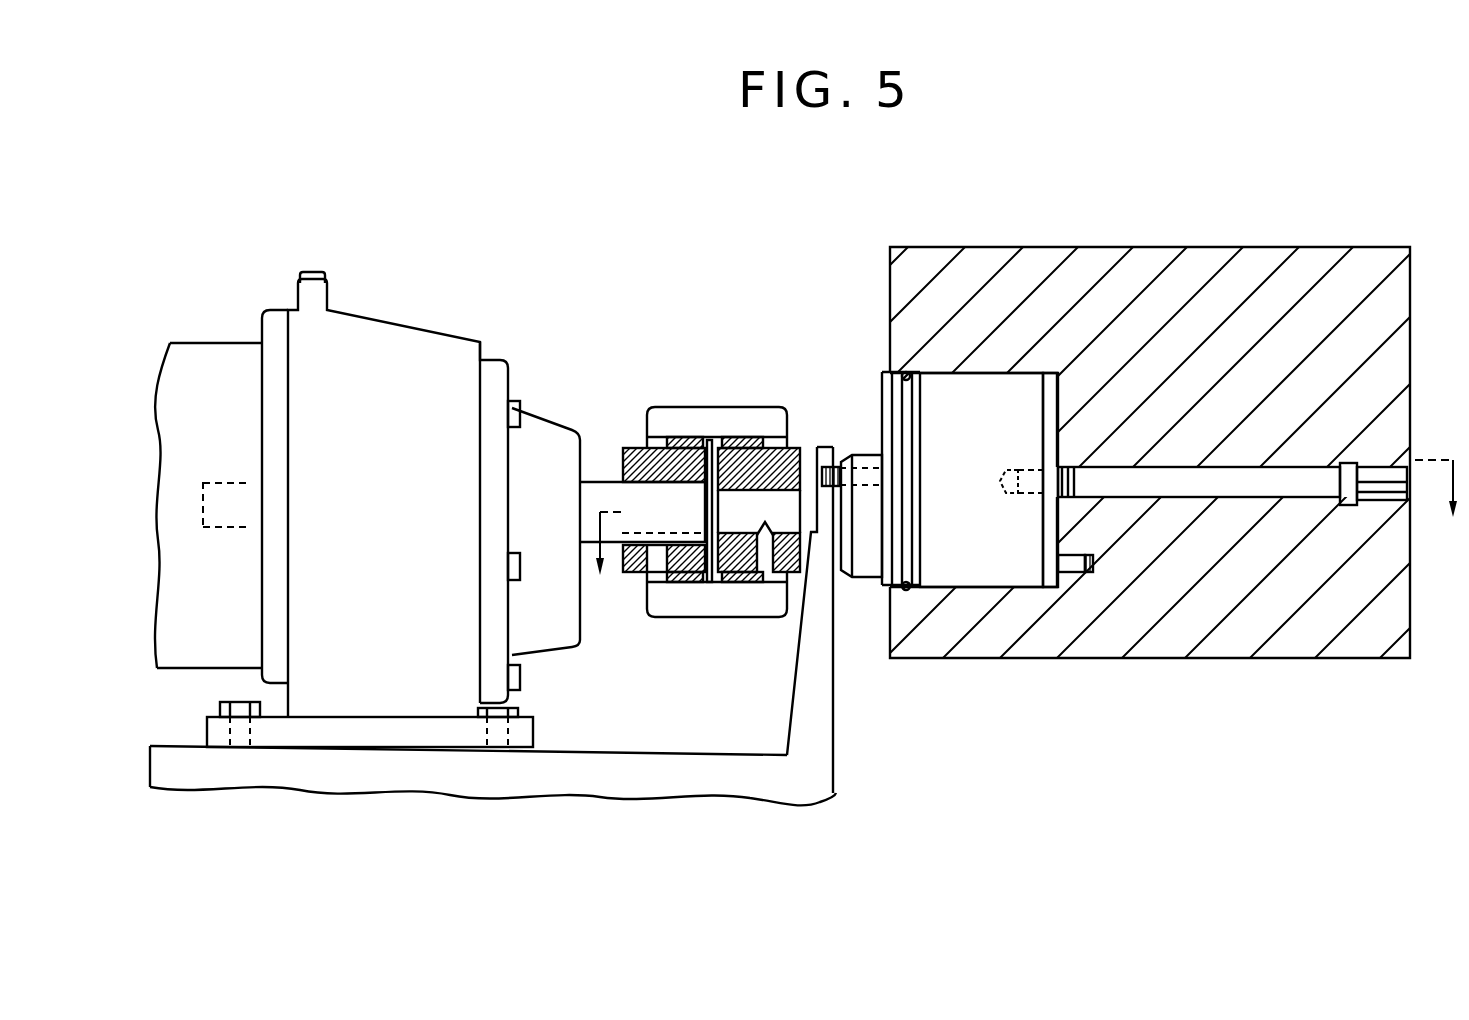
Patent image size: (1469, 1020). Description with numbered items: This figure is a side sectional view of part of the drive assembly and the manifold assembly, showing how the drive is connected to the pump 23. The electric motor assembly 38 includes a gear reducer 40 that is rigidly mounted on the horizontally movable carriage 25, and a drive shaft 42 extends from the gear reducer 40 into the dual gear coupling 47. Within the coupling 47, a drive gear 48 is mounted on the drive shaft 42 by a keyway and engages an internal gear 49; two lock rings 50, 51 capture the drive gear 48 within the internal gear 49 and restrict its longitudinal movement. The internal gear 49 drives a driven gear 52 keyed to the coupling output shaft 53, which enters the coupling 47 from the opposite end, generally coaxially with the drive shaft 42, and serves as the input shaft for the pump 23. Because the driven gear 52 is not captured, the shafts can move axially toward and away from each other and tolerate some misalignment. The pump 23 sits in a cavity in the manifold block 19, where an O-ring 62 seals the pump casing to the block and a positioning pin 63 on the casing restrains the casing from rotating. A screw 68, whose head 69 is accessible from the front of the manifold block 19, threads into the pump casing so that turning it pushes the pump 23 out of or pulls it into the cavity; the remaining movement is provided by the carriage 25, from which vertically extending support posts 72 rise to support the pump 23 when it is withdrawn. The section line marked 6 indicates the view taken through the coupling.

The manifold block 19 is at (1050, 262).
The pump 23 is at (1027, 435).
The carriage 25 is at (428, 780).
The electric motor assembly 38 is at (202, 357).
The gear reducer 40 is at (408, 342).
The drive shaft 42 is at (600, 490).
The dual gear coupling 47 is at (717, 395).
The drive gear 48 is at (637, 467).
The internal gear 49 is at (677, 417).
The lock ring 50 is at (667, 573).
The lock ring 51 is at (710, 582).
The driven gear 52 is at (742, 452).
The coupling output shaft 53 is at (810, 445).
The O-ring 62 is at (904, 590).
The positioning pin 63 is at (1078, 563).
The screw 68 is at (1185, 490).
The head 69 is at (1380, 477).
The support post 72 is at (820, 725).
The section line 6- 6 is at (1025, 540).